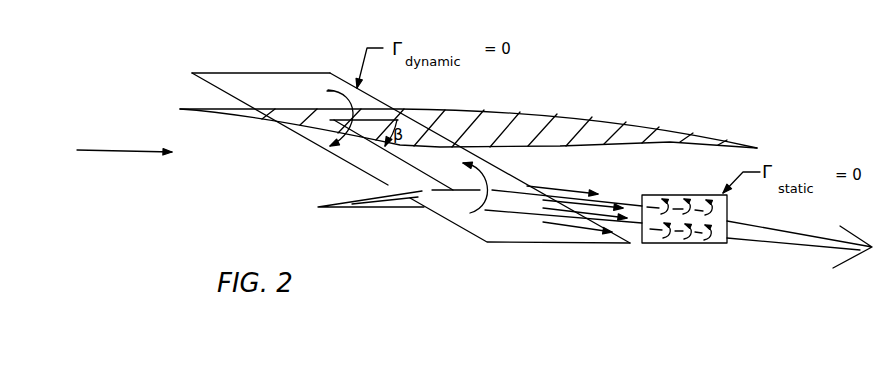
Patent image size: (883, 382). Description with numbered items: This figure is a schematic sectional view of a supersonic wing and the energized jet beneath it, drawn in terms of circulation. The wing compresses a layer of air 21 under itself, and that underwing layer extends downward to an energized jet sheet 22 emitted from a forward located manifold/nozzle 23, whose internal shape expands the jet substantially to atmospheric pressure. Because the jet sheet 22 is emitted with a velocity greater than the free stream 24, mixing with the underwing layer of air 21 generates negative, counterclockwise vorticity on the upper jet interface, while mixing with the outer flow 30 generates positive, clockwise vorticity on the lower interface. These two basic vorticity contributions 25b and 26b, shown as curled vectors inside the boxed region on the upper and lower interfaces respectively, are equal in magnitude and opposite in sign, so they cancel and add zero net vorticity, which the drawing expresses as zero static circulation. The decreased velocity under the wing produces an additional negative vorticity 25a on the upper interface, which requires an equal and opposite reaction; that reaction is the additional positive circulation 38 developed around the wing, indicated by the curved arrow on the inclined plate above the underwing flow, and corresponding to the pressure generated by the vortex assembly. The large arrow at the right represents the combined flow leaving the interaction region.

The layer of air 21 is at (548, 189).
The energized jet sheet 22 is at (607, 201).
The manifold/nozzle 23 is at (348, 208).
The free stream 24 is at (122, 152).
The additional negative vorticity 25a is at (470, 213).
The basic vorticity contribution on upper interface 25b is at (681, 195).
The basic vorticity contribution on lower interface 26b is at (676, 240).
The outer flow 30 is at (573, 227).
The additional positive circulation 38 is at (330, 73).